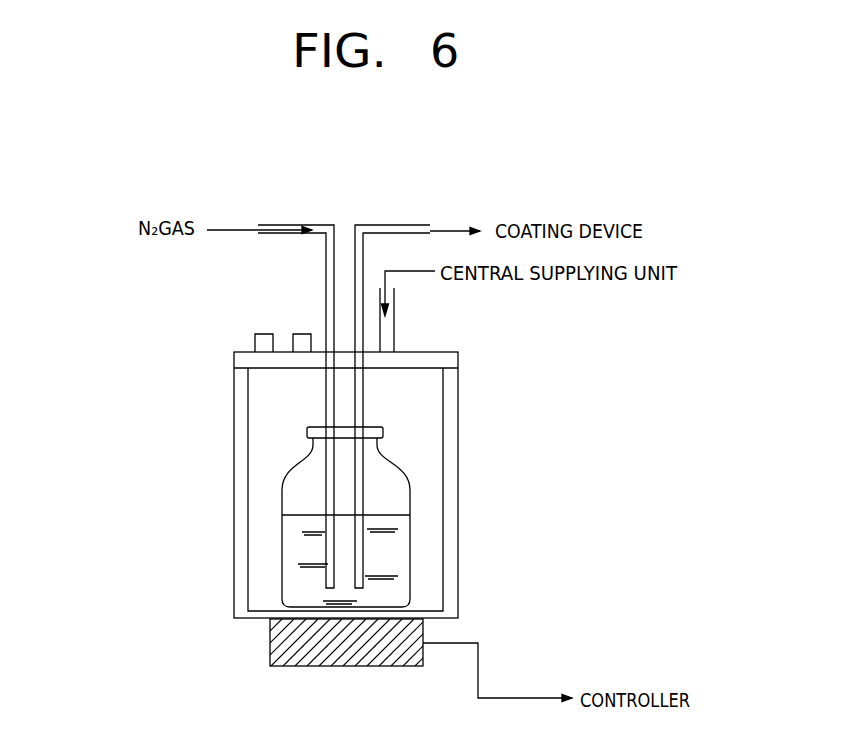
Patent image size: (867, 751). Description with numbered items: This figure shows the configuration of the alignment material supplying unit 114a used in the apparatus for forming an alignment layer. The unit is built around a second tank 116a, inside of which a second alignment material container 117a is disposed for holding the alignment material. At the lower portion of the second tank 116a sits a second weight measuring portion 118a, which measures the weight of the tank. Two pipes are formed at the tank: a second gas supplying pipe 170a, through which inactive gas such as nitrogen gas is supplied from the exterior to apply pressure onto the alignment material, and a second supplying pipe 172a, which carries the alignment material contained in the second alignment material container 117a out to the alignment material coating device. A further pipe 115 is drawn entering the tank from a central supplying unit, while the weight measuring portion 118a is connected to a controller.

The alignment material supplying unit 114a is at (505, 424).
The supply pipe from central supplying unit 115 is at (395, 318).
The second tank 116a is at (458, 471).
The second alignment material container 117a is at (400, 550).
The second weight measuring portion 118a is at (347, 666).
The second gas supplying pipe 170a is at (285, 222).
The second supplying pipe 172a is at (393, 222).